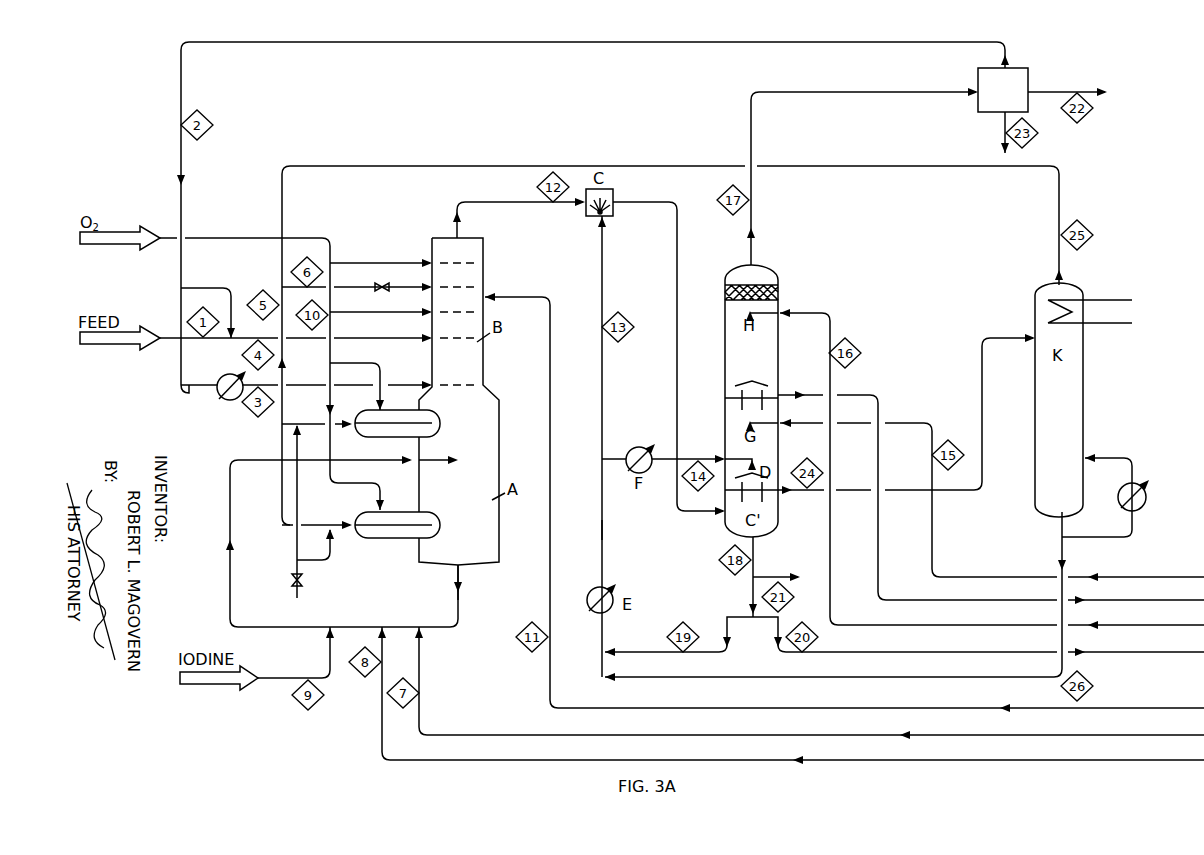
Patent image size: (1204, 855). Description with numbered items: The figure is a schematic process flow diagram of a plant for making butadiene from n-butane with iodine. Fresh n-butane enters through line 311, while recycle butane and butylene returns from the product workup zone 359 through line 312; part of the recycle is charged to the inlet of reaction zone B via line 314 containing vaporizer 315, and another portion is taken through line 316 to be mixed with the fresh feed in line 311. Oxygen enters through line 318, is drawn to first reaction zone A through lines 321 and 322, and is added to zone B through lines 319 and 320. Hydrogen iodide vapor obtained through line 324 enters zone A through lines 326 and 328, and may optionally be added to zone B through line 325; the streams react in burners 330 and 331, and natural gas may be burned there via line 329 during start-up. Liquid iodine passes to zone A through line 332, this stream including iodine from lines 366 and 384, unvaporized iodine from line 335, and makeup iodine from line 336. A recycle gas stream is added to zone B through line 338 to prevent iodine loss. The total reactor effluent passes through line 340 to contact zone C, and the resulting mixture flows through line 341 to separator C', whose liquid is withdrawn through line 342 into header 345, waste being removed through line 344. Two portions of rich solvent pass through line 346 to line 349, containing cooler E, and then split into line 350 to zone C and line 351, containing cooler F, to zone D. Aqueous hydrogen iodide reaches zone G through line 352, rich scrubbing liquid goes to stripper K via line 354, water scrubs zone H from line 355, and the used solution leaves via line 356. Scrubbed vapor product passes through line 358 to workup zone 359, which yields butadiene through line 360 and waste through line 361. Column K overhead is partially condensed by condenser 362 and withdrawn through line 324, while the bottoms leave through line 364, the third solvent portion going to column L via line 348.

The fresh feed line 311 is at (222, 340).
The recycle line 312 is at (410, 42).
The recycle feed line 314 is at (198, 394).
The vaporizer 315 is at (222, 399).
The recycle branch line 316 is at (193, 288).
The oxygen feed line 318 is at (198, 238).
The oxygen line to zone B 319 is at (345, 263).
The oxygen line to zone B 320 is at (345, 312).
The oxygen line to zone A 321 is at (352, 363).
The oxygen line to zone A 322 is at (344, 468).
The hydrogen iodide overhead line 324 is at (350, 166).
The hydrogen iodide line to zone B 325 is at (345, 287).
The hydrogen iodide inlet line 326 is at (338, 424).
The hydrogen iodide inlet line 328 is at (306, 525).
The natural gas line 329 is at (296, 551).
The burner 330 is at (398, 408).
The burner 331 is at (398, 540).
The liquid iodine line 332 is at (230, 487).
The iodine bottoms line 335 is at (459, 608).
The makeup iodine line 336 is at (258, 677).
The recycle gas line 338 is at (550, 333).
The reactor effluent line 340 is at (470, 201).
The contact zone outlet line 341 is at (622, 201).
The separator liquid line 342 is at (757, 551).
The waste line 344 is at (773, 576).
The header 345 is at (735, 620).
The solvent recycle line 346 is at (643, 653).
The solvent line to column L 348 is at (1145, 652).
The cooled solvent line 349 is at (602, 524).
The solvent line to zone C 350 is at (602, 362).
The solvent line to zone D 351 is at (690, 458).
The aqueous hydrogen iodide line 352 is at (893, 423).
The stripper charge line 354 is at (955, 491).
The water scrub line 355 is at (798, 313).
The used scrubbing solution line 356 is at (848, 394).
The scrubbed product line 358 is at (757, 210).
The product workup zone 359 is at (978, 68).
The butadiene product line 360 is at (1040, 92).
The waste stream line 361 is at (1003, 126).
The condenser 362 is at (1076, 297).
The column K bottoms line 364 is at (1058, 562).
The iodine line from column L 366 is at (422, 672).
The iodine line from oxidizer drum 384 is at (1145, 760).